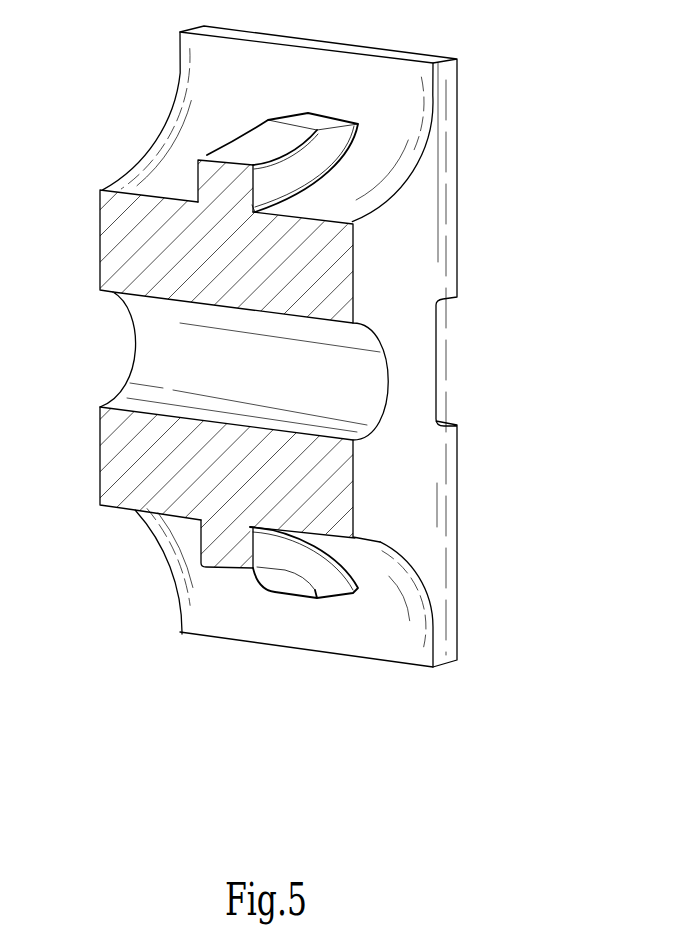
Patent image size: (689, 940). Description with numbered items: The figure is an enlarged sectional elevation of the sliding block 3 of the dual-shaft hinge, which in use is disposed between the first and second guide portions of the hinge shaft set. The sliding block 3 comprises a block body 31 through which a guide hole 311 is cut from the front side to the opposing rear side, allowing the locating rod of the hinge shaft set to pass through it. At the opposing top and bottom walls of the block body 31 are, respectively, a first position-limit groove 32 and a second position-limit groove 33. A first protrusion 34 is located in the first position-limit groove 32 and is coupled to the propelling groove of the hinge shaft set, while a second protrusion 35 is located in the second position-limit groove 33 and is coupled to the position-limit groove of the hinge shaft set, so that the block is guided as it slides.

The sliding block 3 is at (500, 195).
The block body 31 is at (422, 378).
The guide hole 311 is at (170, 363).
The first position-limit groove 32 is at (181, 103).
The second position-limit groove 33 is at (207, 587).
The first protrusion 34 is at (221, 158).
The second protrusion 35 is at (220, 558).